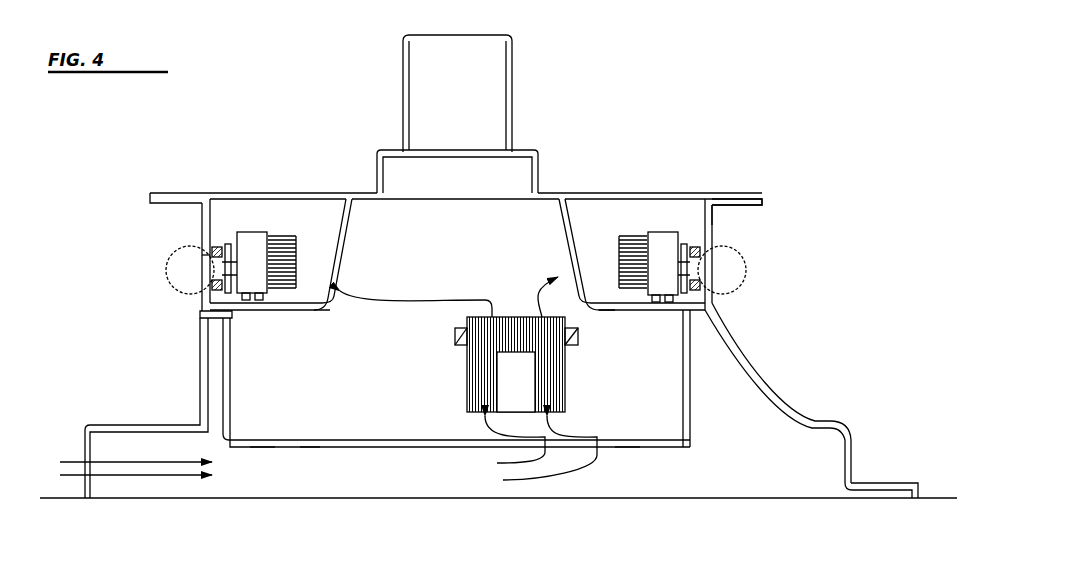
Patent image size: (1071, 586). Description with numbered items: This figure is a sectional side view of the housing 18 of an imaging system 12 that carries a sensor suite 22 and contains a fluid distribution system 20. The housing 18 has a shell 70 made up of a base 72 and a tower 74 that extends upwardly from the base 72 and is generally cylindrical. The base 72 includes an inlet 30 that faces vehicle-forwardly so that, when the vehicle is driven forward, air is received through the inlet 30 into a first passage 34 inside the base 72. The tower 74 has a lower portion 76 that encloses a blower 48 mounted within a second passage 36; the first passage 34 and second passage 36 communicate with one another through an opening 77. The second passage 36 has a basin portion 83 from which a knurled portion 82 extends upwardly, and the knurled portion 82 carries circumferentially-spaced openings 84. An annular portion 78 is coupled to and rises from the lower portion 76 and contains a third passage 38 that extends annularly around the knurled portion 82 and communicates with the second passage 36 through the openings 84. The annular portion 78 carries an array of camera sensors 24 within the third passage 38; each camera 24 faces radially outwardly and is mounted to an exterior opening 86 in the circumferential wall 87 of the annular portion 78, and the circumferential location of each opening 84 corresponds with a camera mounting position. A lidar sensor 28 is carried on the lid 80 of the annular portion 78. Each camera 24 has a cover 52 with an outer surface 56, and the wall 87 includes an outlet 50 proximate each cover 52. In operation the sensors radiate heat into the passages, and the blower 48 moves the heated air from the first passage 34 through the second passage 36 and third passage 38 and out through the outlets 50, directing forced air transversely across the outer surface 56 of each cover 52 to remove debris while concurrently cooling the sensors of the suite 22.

The imaging system 12 is at (672, 115).
The housing 18 is at (610, 188).
The fluid distribution system 20 is at (778, 465).
The sensor suite 22 is at (255, 216).
The camera sensor 24 is at (250, 235).
The lidar sensor 28 is at (512, 42).
The inlet 30 is at (85, 438).
The first passage 34 is at (307, 448).
The second passage 36 is at (278, 438).
The third passage 38 is at (345, 218).
The blower 48 is at (467, 366).
The outlet 50 is at (186, 292).
The cover 52 is at (200, 257).
The outer surface 56 is at (208, 268).
The shell 70 is at (836, 428).
The base 72 is at (852, 450).
The tower 74 is at (200, 318).
The lower portion 76 is at (740, 352).
The opening 77 is at (628, 448).
The annular portion 78 is at (714, 216).
The lid 80 is at (695, 193).
The knurled portion 82 is at (340, 210).
The basin portion 83 is at (262, 448).
The opening 84 is at (330, 308).
The exterior opening 86 is at (201, 262).
The circumferential wall 87 is at (714, 226).